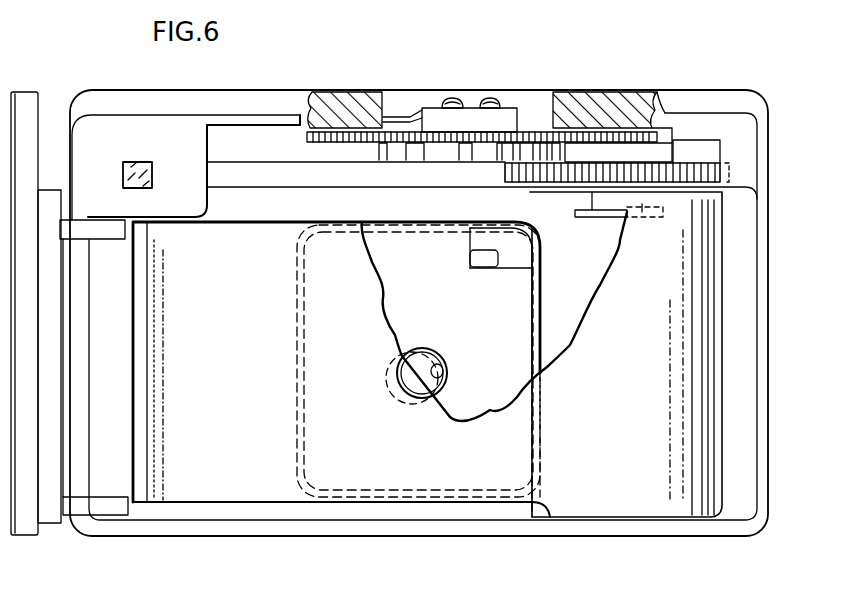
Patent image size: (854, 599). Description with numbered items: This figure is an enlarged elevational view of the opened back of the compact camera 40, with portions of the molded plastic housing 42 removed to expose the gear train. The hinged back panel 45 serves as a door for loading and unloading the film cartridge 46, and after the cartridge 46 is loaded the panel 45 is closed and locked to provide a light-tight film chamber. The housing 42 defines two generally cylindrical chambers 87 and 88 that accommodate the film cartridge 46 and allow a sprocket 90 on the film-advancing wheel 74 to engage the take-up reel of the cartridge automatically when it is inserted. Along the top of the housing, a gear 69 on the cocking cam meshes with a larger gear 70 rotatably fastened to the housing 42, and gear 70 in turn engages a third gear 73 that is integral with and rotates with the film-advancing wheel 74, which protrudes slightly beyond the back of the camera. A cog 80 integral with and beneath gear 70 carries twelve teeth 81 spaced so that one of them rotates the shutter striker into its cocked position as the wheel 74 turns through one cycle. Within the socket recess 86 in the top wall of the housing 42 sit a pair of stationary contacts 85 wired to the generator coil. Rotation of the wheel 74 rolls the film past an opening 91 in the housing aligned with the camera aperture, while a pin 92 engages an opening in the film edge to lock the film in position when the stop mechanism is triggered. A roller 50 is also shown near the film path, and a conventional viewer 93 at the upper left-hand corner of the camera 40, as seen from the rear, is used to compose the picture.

The camera 40 is at (810, 242).
The housing 42 is at (769, 350).
The back panel 45 is at (27, 102).
The film cartridge 46 is at (238, 492).
The roller 50 is at (420, 356).
The gear 69 is at (310, 143).
The gear 70 is at (455, 138).
The third gear 73 is at (632, 140).
The film-advancing wheel 74 is at (712, 165).
The cog 80 is at (462, 157).
The teeth 81 is at (393, 160).
The stationary contacts 85 is at (458, 100).
The socket recess 86 is at (551, 95).
The cylindrical chamber 87 is at (532, 212).
The cylindrical chamber 88 is at (140, 493).
The sprocket 90 is at (580, 216).
The opening 91 is at (443, 375).
The pin 92 is at (478, 270).
The viewer 93 is at (135, 168).